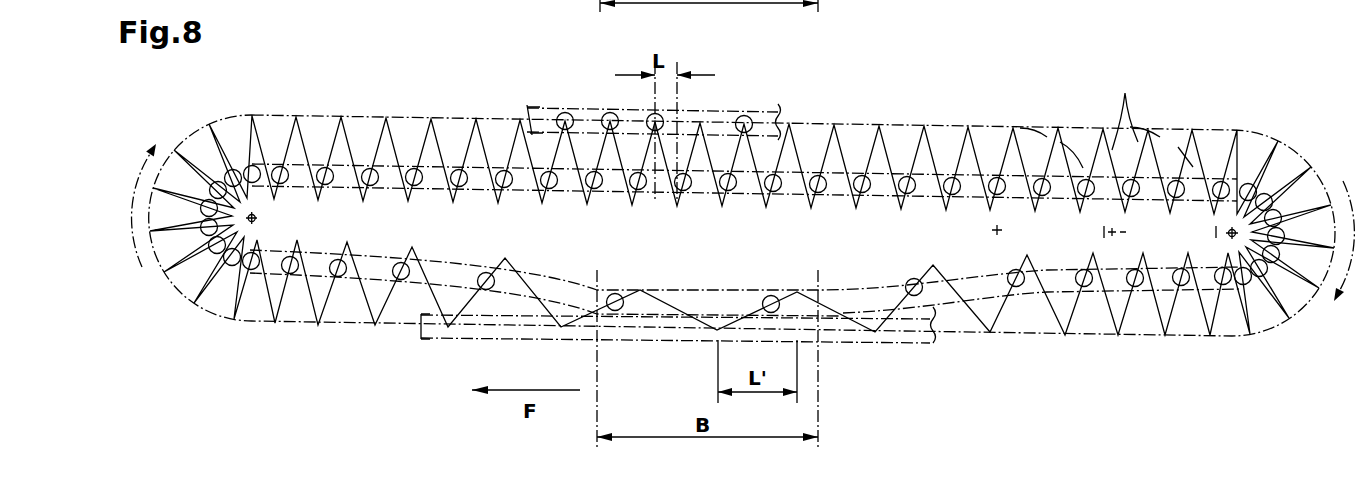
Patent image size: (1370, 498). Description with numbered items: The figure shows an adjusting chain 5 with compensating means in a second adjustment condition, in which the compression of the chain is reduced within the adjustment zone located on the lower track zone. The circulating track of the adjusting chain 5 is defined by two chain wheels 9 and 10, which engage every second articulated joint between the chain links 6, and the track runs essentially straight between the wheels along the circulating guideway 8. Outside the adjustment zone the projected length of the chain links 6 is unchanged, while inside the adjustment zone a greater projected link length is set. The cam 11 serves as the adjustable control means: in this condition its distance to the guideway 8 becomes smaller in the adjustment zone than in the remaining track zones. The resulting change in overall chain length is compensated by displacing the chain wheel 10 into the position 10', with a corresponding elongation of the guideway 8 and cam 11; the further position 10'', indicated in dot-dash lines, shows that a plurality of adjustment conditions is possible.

The adjusting chain 5 is at (1180, 108).
The chain links 6 is at (1125, 93).
The guideway 8 is at (532, 107).
The chain wheel 9 is at (233, 135).
The chain wheel 10 is at (1051, 111).
The displaced chain wheel position 10' is at (1310, 278).
The further chain wheel position 10'' is at (1238, 120).
The cam 11 is at (377, 278).